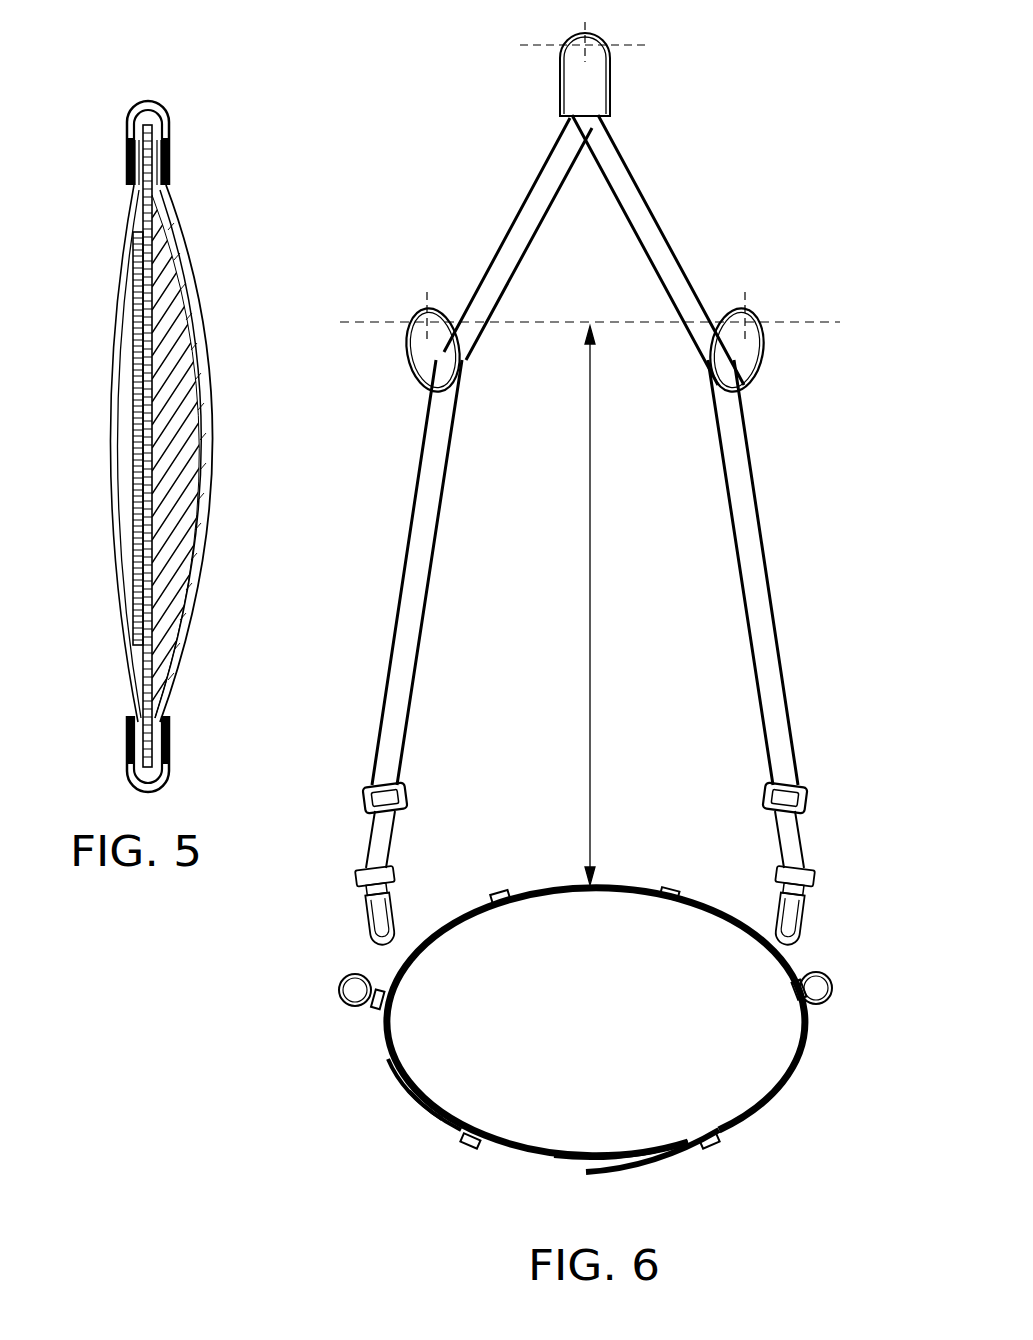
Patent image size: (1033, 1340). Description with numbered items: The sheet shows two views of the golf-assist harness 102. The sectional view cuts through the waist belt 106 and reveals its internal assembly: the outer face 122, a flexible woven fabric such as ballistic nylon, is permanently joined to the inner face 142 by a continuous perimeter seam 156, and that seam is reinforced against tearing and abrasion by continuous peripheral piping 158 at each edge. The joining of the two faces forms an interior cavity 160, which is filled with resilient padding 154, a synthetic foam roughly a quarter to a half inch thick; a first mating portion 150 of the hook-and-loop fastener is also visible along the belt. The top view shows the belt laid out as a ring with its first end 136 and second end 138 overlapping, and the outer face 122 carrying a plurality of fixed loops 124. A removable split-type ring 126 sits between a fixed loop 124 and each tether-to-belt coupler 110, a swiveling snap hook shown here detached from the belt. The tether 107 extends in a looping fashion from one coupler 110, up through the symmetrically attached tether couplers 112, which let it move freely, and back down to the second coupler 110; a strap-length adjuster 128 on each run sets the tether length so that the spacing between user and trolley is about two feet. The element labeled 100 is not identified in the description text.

In FIG. 6, the lifting device 100 is at (514, 112).
In FIG. 6, the golf-assist harness 102 is at (427, 115).
In FIG. 5, the waist belt 106 is at (147, 76).
In FIG. 6, the tether 107 is at (432, 620).
In FIG. 6, the tether-to-belt coupler 110 is at (365, 928).
In FIG. 6, the tether coupler 112 is at (610, 70).
In FIG. 5, the outer face 122 is at (143, 210).
In FIG. 6, the outer face 122 is at (404, 1120).
In FIG. 5, the fixed loop 124 is at (110, 295).
In FIG. 6, the fixed loop 124 is at (503, 887).
In FIG. 6, the ring 126 is at (352, 972).
In FIG. 6, the strap-length adjuster 128 is at (352, 800).
In FIG. 6, the first end 136 is at (686, 1140).
In FIG. 6, the second end 138 is at (606, 1180).
In FIG. 5, the inner face 142 is at (207, 427).
In FIG. 6, the inner face 142 is at (428, 935).
In FIG. 5, the first mating portion 150 is at (135, 378).
In FIG. 6, the first mating portion 150 is at (434, 1138).
In FIG. 5, the resilient padding 154 is at (180, 270).
In FIG. 5, the perimeter seam 156 is at (168, 162).
In FIG. 5, the peripheral piping 158 is at (128, 118).
In FIG. 5, the interior cavity 160 is at (170, 340).